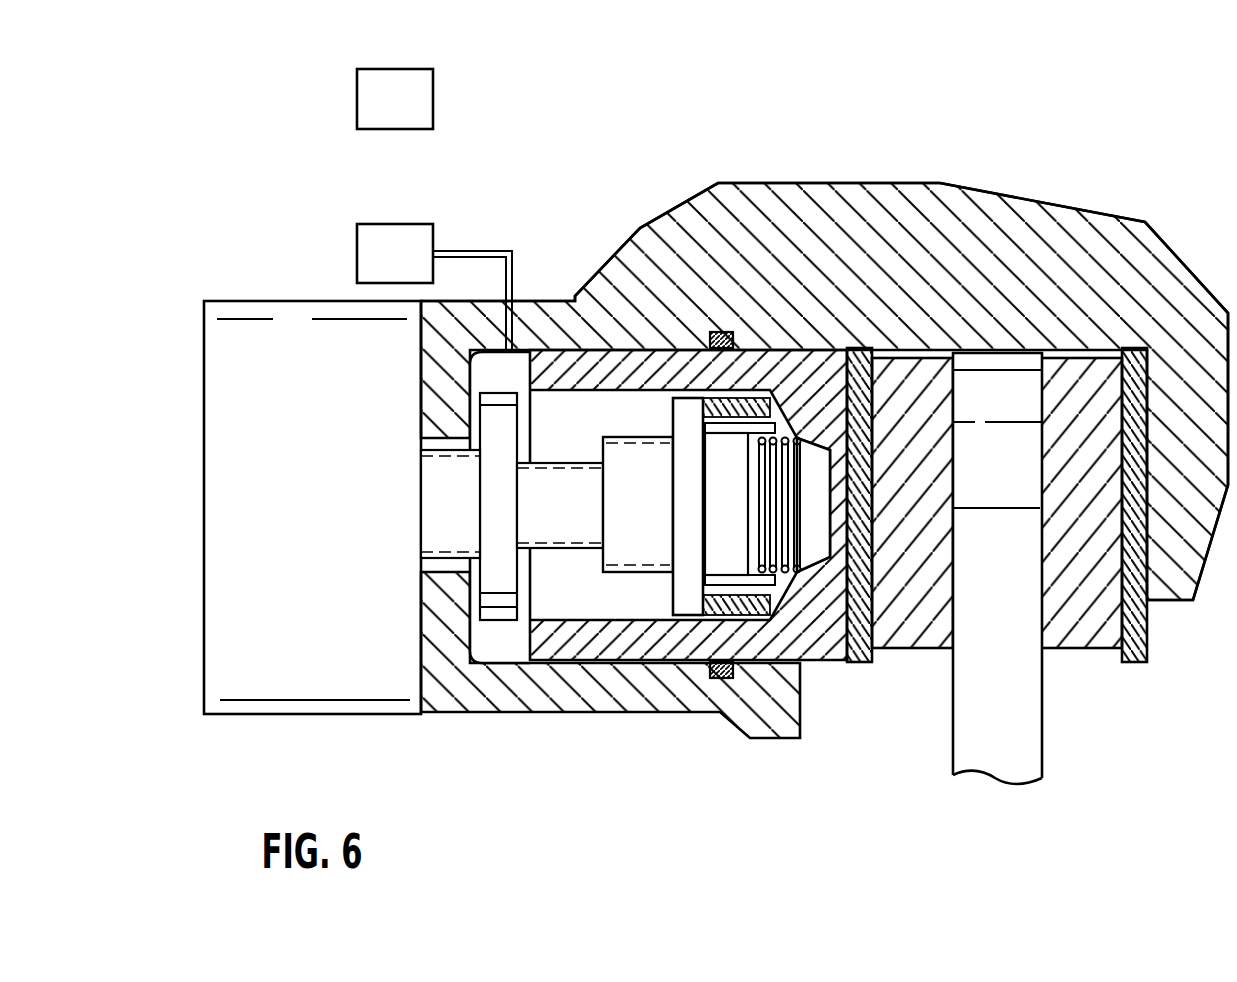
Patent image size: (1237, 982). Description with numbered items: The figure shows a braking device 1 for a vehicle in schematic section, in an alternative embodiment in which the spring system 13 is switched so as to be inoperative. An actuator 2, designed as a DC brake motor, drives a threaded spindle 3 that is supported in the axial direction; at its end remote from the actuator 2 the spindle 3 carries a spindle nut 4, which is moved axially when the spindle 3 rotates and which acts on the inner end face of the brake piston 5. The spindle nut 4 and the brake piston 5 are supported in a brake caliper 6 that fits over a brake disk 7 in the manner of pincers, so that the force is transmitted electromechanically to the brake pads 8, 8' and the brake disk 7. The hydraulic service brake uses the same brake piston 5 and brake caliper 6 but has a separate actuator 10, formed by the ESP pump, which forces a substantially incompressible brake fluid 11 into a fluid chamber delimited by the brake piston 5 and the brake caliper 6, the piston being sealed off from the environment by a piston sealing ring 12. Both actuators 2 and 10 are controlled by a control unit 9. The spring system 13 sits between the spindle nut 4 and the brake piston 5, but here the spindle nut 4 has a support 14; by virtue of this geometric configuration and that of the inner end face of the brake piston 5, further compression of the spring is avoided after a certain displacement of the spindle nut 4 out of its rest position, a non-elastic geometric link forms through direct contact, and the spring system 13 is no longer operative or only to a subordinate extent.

The braking device 1 is at (1130, 166).
The actuator 2 is at (230, 295).
The spindle 3 is at (565, 523).
The spindle nut 4 is at (628, 523).
The brake piston 5 is at (675, 643).
The brake caliper 6 is at (882, 218).
The brake disk 7 is at (995, 750).
The brake pad 8 is at (912, 550).
The brake pad 8' is at (1081, 549).
The control unit 9 is at (375, 96).
The actuator 10 is at (375, 250).
The brake fluid 11 is at (503, 650).
The piston sealing ring 12 is at (721, 682).
The spring system 13 is at (776, 575).
The support 14 is at (752, 600).